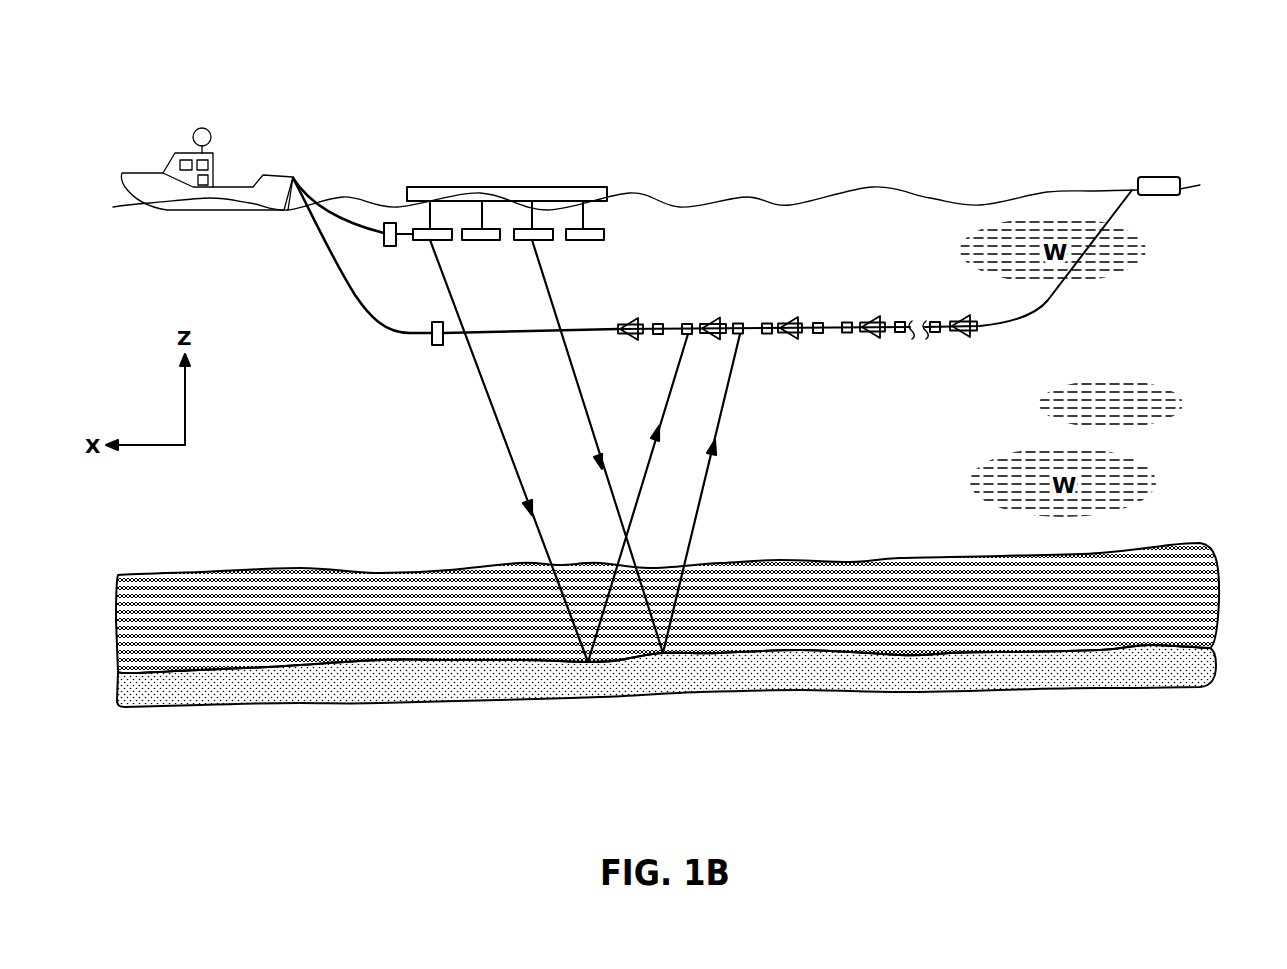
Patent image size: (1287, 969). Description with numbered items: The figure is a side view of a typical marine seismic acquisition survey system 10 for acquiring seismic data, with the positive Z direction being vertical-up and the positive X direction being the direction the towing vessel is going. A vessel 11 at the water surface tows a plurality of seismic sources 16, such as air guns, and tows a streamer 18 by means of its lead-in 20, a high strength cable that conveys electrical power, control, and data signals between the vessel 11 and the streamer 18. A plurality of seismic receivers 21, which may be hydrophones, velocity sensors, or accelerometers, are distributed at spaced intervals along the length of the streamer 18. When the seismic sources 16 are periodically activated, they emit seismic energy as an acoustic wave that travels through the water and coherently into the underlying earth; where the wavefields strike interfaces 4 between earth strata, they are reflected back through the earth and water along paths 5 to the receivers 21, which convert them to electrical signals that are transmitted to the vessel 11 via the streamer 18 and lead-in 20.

The marine seismic acquisition survey system 10 is at (1273, 86).
The vessel 11 is at (145, 173).
The seismic sources 16 is at (545, 240).
The streamers 18 is at (673, 325).
The lead-ins 20 is at (350, 297).
The seismic receivers 21 is at (664, 324).
The interfaces 4 is at (937, 653).
The paths 5 is at (650, 462).